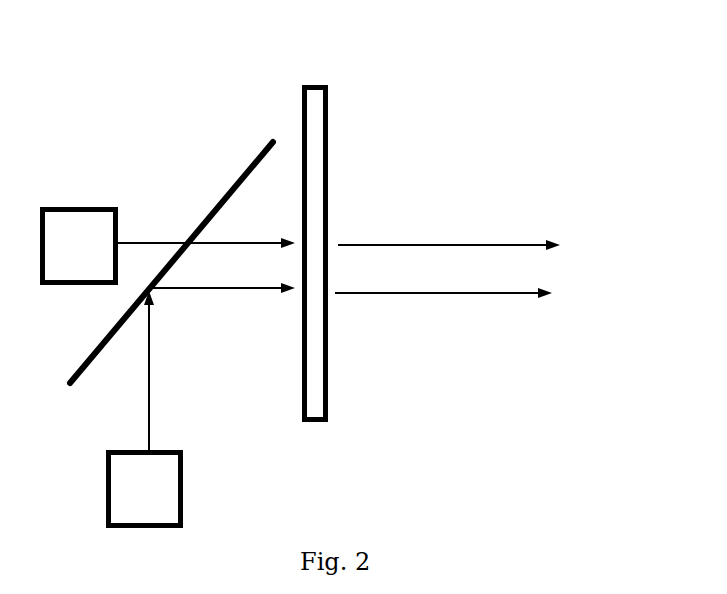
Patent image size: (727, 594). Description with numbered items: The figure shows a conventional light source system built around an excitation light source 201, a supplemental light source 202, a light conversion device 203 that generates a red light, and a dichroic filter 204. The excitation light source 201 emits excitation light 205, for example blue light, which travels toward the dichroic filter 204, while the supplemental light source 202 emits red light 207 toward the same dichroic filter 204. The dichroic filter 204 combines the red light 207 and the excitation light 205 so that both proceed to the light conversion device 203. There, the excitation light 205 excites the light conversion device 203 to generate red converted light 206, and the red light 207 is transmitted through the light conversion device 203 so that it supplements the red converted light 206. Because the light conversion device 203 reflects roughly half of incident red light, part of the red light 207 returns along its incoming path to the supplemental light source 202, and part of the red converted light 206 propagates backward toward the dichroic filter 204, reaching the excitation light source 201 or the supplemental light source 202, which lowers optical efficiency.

The excitation light source 201 is at (90, 207).
The supplemental light source 202 is at (183, 505).
The light conversion device 203 is at (314, 92).
The dichroic filter 204 is at (253, 165).
The excitation light 205 is at (150, 243).
The red converted light 206 is at (447, 245).
The red light 207 is at (445, 293).